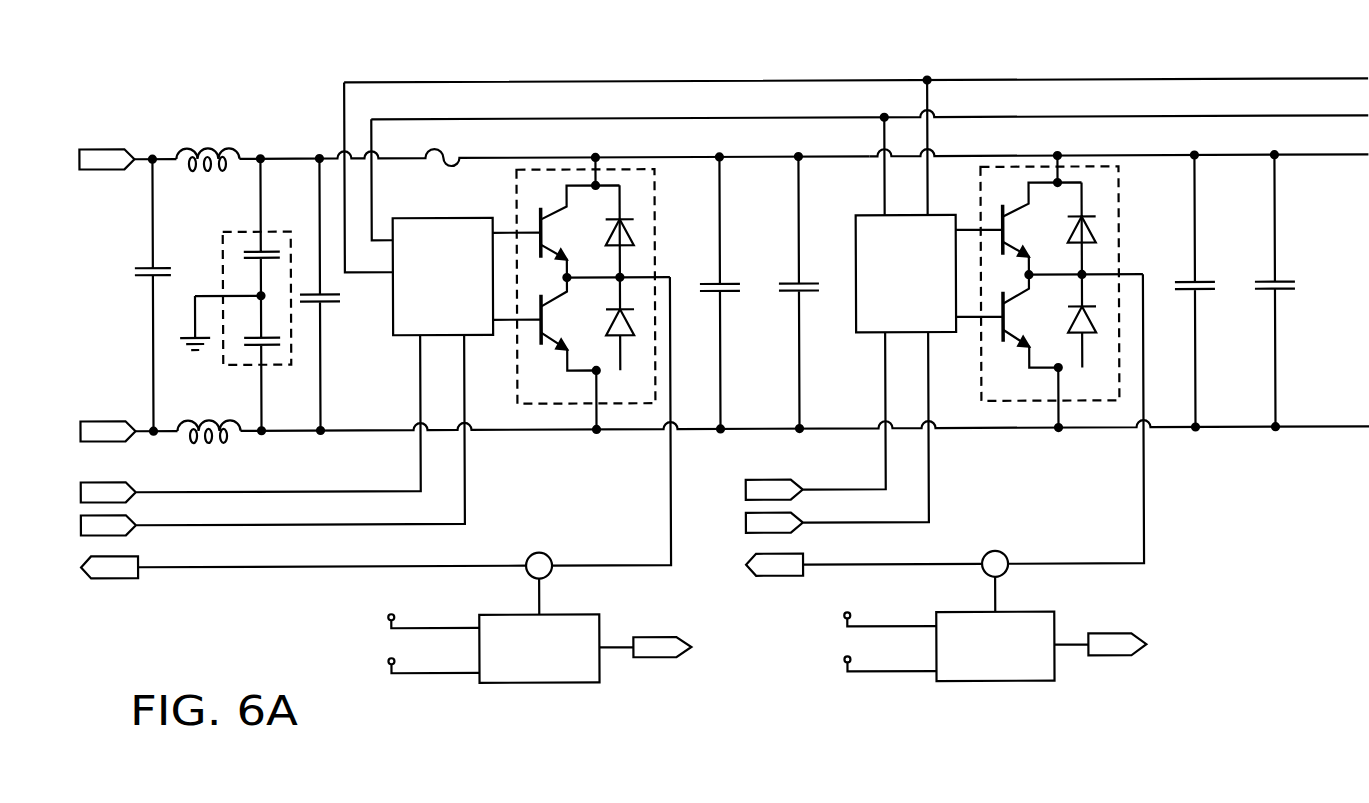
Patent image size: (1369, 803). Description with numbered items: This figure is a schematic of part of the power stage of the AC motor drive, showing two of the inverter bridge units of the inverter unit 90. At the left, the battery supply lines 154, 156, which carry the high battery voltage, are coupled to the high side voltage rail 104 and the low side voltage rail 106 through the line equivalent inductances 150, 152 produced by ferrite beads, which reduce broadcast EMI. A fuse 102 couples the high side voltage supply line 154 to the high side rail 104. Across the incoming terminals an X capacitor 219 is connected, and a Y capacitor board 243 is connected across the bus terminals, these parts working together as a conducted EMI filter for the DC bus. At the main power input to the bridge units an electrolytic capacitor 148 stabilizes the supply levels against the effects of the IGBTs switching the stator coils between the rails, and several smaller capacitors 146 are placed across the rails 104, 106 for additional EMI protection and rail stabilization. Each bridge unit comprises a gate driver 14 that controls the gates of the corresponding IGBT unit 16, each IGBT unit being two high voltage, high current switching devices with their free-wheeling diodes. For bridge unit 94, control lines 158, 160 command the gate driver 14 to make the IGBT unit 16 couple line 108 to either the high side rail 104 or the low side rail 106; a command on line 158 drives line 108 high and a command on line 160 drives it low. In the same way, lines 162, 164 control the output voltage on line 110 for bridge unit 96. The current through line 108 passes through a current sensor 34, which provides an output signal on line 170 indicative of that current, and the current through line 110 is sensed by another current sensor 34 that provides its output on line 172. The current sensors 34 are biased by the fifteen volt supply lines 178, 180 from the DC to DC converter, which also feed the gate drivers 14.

The inverter unit 90 is at (683, 140).
The fuse 102 is at (444, 149).
The high side voltage rail 104 is at (1148, 155).
The low side voltage rail 106 is at (756, 431).
The high side voltage supply line 154 is at (148, 154).
The supply line 156 is at (150, 437).
The line equivalent inductance 150 is at (214, 148).
The line equivalent inductance 152 is at (238, 436).
The X capacitor 219 is at (149, 265).
The Y capacitor board 243 is at (249, 364).
The electrolytic capacitor 148 is at (333, 302).
The gate driver 14 is at (478, 321).
The IGBT unit 16 is at (656, 224).
The IGBT unit 94 is at (560, 412).
The IGBT unit 96 is at (1097, 413).
The capacitor 146 is at (795, 297).
The control line 158 is at (330, 490).
The control line 160 is at (368, 523).
The control line 162 is at (847, 491).
The control line 164 is at (833, 525).
The output line 108 is at (602, 565).
The output line 110 is at (957, 563).
The current sensor 34 is at (533, 680).
The power line 178 is at (427, 627).
The power line 180 is at (445, 673).
The output signal line 170 is at (647, 655).
The output signal line 172 is at (1112, 647).